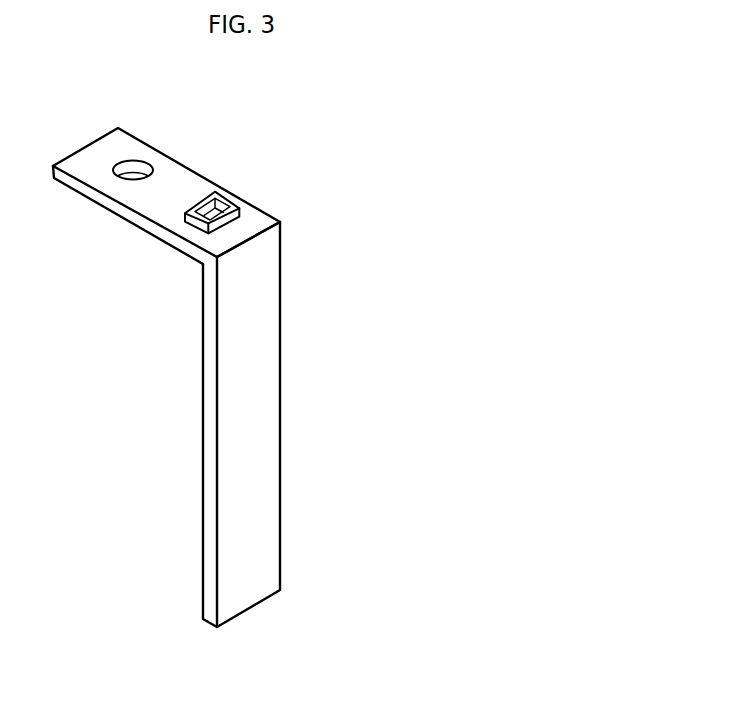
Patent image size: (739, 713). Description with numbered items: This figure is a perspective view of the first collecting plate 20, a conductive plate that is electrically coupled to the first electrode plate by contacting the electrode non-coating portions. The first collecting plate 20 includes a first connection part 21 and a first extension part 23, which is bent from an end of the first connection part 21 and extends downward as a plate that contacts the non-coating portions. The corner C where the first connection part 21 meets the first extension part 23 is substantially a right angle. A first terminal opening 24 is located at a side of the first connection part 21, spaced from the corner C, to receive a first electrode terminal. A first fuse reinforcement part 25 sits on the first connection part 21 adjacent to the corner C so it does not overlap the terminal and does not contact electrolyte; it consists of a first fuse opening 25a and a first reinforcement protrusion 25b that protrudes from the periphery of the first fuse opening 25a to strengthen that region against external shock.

The first collecting plate 20 is at (353, 202).
The first connection part 21 is at (102, 153).
The first extension part 23 is at (267, 361).
The first terminal opening 24 is at (137, 170).
The first fuse reinforcement part 25 is at (275, 117).
The first fuse opening 25a is at (227, 204).
The first reinforcement protrusion 25b is at (220, 204).
The corner C is at (250, 239).